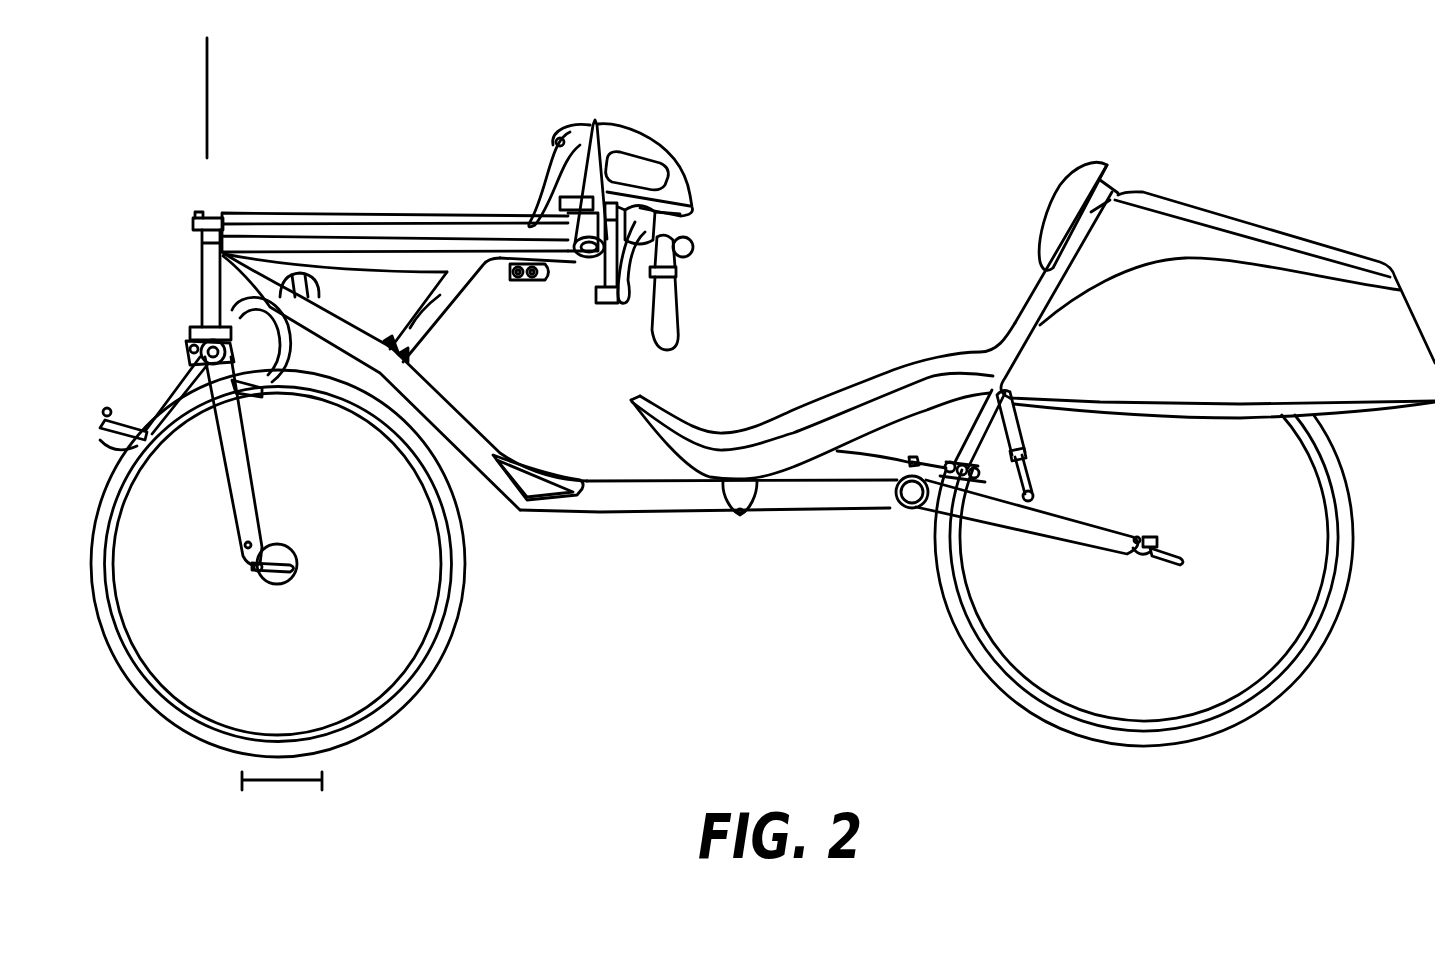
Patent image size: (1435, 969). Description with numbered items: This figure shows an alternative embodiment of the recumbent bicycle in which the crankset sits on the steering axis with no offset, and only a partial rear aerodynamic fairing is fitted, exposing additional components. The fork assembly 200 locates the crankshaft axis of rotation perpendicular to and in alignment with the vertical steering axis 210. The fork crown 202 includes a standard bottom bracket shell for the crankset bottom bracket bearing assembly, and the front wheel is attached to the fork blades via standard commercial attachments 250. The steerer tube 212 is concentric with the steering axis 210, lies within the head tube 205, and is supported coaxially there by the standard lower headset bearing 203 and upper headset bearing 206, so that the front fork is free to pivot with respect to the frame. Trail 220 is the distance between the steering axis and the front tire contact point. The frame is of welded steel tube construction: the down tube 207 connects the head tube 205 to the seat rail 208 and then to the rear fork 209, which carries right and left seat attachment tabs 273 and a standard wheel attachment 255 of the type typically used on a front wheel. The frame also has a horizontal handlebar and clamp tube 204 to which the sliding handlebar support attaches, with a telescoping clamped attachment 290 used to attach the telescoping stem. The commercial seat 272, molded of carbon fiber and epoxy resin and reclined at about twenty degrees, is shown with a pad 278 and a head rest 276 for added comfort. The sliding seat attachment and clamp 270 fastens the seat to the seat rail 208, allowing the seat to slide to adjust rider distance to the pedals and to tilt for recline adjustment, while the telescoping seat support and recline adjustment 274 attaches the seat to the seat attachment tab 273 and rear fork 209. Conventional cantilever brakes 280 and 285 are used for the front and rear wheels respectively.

The fork assembly 200 is at (263, 449).
The fork crown 202 is at (202, 353).
The lower headset bearing 203 is at (190, 334).
The frame horizontal handlebar and clamp tube 204 is at (408, 265).
The head tube 205 is at (198, 243).
The upper headset bearing 206 is at (200, 225).
The down tube 207 is at (437, 392).
The seat rail 208 is at (617, 512).
The rear fork 209 is at (1105, 525).
The steering axis 210 is at (207, 82).
The steerer tube 212 is at (210, 292).
The trail 220 is at (280, 781).
The standard commercial attachments 250 is at (258, 569).
The standard wheel attachment 255 is at (1160, 541).
The sliding seat attachment and clamp 270 is at (742, 518).
The seat 272 is at (847, 403).
The seat attachment tab 273 is at (1035, 493).
The telescoping seat support and recline adjustment 274 is at (1028, 452).
The head rest 276 is at (1050, 198).
The pad 278 is at (897, 378).
The cantilever brake 280 is at (262, 397).
The cantilever brake 285 is at (940, 457).
The telescoping clamped attachment 290 is at (540, 282).